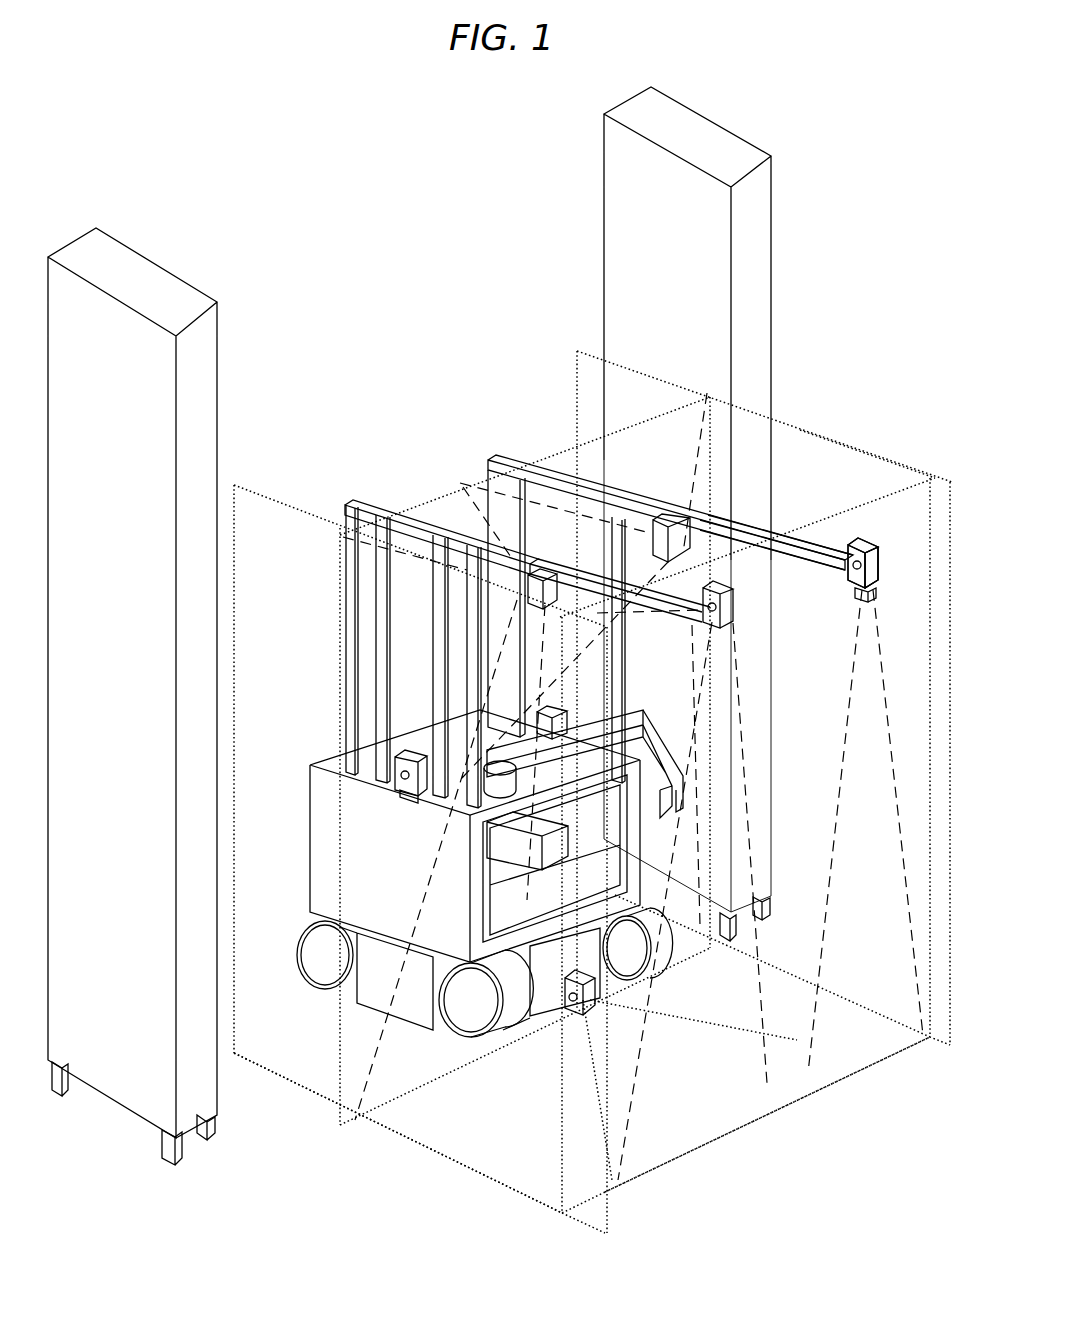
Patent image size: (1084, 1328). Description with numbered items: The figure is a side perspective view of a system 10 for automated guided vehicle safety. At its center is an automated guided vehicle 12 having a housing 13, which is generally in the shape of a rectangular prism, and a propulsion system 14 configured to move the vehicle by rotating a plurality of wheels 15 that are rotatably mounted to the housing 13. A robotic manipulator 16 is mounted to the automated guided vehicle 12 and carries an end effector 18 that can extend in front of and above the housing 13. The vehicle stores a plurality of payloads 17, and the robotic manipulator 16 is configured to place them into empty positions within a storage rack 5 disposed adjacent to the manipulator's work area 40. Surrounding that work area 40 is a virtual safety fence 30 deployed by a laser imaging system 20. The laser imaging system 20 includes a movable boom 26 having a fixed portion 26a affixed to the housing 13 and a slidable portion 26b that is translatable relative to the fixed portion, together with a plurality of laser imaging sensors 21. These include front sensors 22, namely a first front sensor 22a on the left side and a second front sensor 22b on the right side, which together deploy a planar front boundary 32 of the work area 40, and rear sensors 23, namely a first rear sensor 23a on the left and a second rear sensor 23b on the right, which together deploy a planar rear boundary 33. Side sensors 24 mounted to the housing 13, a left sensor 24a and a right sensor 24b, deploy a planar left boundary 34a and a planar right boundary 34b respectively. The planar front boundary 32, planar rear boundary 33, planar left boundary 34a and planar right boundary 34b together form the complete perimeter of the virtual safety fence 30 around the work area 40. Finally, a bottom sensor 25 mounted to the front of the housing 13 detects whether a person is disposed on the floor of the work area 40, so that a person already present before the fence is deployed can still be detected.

The storage rack 5 is at (758, 208).
The system 10 is at (204, 188).
The automated guided vehicle 12 is at (330, 755).
The housing 13 is at (318, 802).
The propulsion system 14 is at (380, 997).
The wheels 15 is at (310, 978).
The robotic manipulator 16 is at (657, 738).
The payloads 17 is at (557, 852).
The end effector 18 is at (682, 798).
The laser imaging system 20 is at (858, 540).
The laser imaging sensors 21 is at (886, 578).
The front sensors 22 is at (862, 588).
The first front sensor 22a is at (735, 600).
The second front sensor 22b is at (877, 548).
The rear sensors 23 is at (657, 540).
The first rear sensor 23a is at (560, 557).
The second rear sensor 23b is at (530, 592).
The side sensors 24 is at (402, 782).
The left sensor 24a is at (413, 783).
The right sensor 24b is at (565, 722).
The bottom sensor 25 is at (578, 1000).
The movable boom 26 is at (437, 527).
The fixed portion 26a is at (363, 510).
The slidable portion 26b is at (740, 537).
The virtual safety fence 30 is at (849, 440).
The planar front boundary 32 is at (797, 1100).
The planar rear boundary 33 is at (545, 460).
The planar left boundary 34a is at (287, 507).
The planar right boundary 34b is at (650, 373).
The work area 40 is at (782, 448).